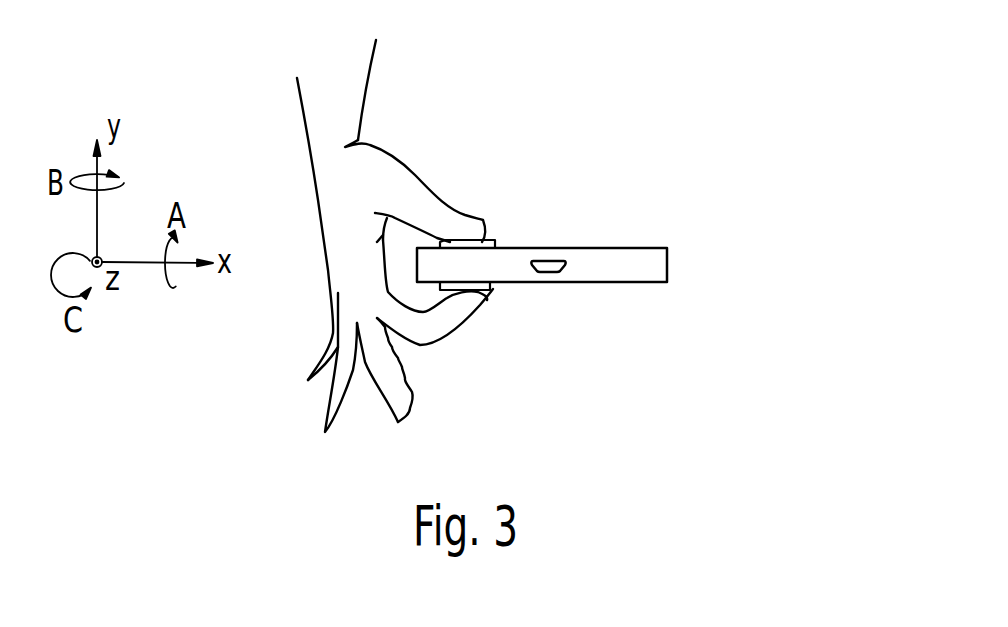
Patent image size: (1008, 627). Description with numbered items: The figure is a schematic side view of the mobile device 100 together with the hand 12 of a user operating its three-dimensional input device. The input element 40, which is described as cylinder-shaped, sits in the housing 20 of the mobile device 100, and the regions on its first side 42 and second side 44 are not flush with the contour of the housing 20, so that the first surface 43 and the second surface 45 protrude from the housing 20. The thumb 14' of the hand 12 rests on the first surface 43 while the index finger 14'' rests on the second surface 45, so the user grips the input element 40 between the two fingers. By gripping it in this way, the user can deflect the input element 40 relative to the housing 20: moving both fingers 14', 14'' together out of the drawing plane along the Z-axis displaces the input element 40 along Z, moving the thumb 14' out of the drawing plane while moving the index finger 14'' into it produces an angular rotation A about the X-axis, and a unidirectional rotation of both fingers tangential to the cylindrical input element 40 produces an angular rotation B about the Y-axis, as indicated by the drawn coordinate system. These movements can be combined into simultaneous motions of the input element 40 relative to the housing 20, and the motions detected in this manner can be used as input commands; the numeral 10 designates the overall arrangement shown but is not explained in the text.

The holding device 10 is at (509, 153).
The hand 12 is at (357, 263).
The thumb 14' is at (415, 153).
The index finger 14'' is at (435, 330).
The housing 20 is at (623, 268).
The input element 40 is at (516, 293).
The first side 42 is at (497, 220).
The first surface 43 is at (490, 242).
The second side 44 is at (498, 318).
The second surface 45 is at (500, 288).
The mobile device 100 is at (649, 202).